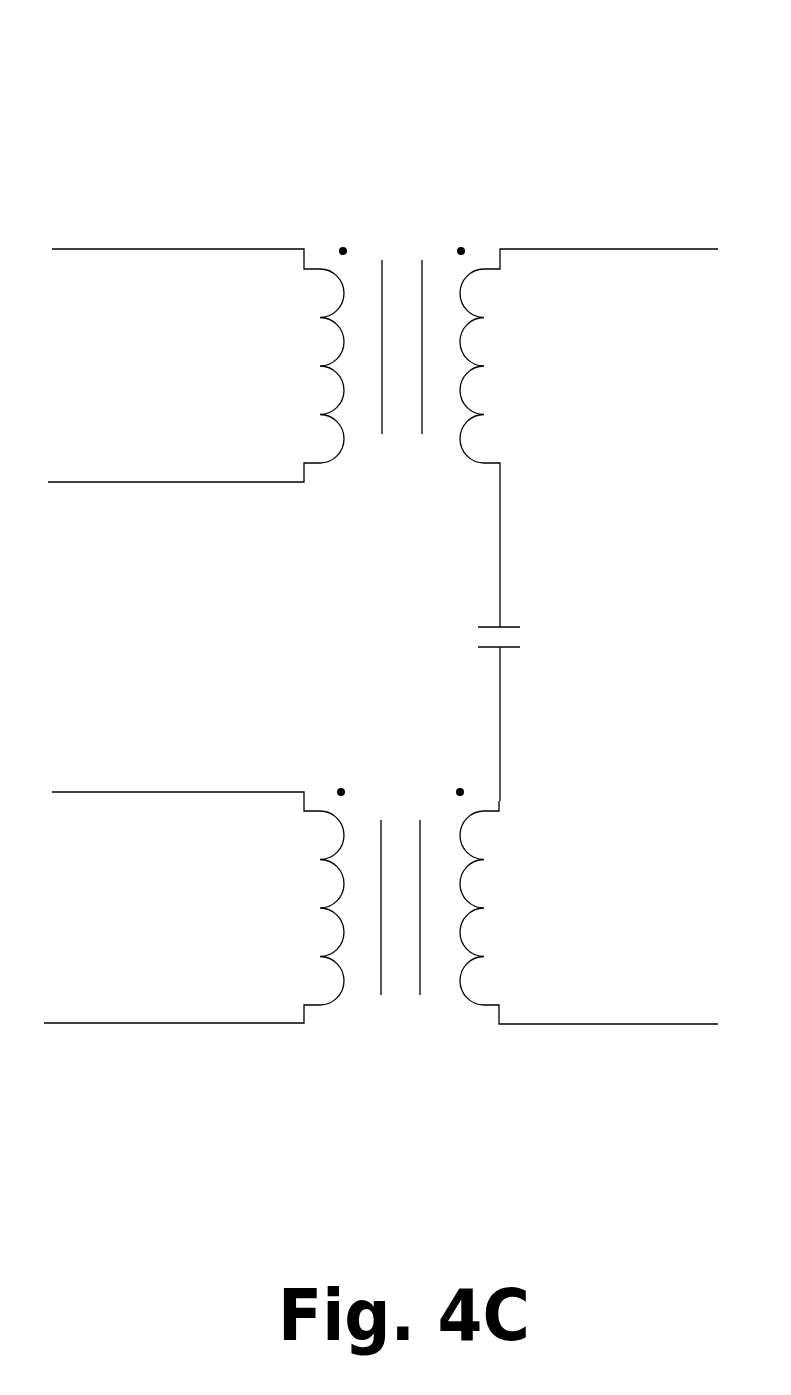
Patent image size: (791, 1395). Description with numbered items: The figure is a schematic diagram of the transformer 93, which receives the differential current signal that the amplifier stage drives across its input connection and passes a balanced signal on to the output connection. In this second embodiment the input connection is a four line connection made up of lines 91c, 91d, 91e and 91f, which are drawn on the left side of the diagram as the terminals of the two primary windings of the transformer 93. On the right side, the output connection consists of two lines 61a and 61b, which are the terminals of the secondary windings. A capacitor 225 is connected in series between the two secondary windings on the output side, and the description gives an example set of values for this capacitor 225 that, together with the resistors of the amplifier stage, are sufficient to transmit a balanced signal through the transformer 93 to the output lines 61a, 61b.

The transformer 93 is at (400, 98).
The line 91c is at (203, 248).
The line 91d is at (203, 481).
The line 91e is at (202, 791).
The line 91f is at (202, 1023).
The line 61a is at (553, 249).
The line 61b is at (591, 1024).
The capacitor 225 is at (529, 637).